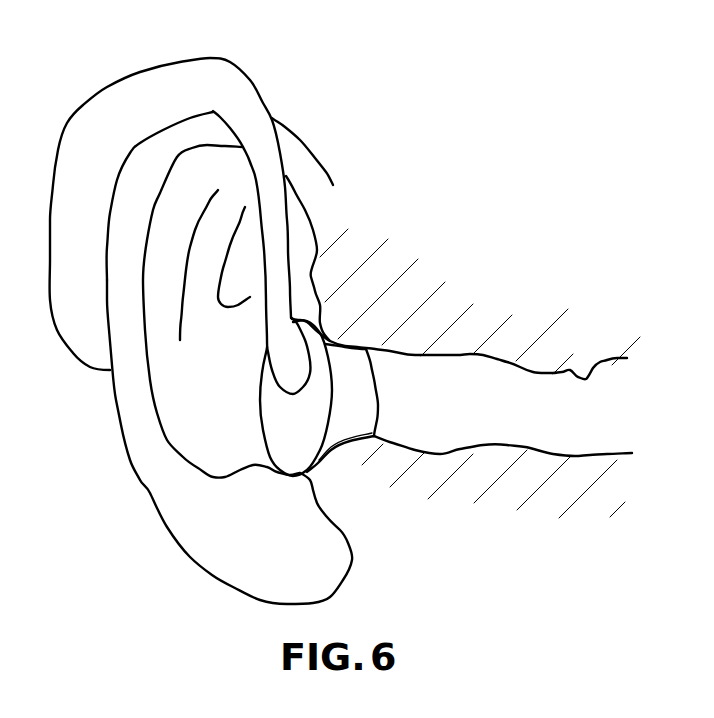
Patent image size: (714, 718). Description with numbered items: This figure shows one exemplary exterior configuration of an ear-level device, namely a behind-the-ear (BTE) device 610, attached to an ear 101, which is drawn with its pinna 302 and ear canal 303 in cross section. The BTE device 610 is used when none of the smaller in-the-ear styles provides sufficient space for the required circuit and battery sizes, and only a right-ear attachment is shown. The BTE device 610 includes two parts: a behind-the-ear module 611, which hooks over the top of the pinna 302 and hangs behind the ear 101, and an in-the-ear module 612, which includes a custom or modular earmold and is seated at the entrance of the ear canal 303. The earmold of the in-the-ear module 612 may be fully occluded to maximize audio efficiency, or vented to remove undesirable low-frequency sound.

The ear 101 is at (211, 373).
The pinna 302 is at (130, 417).
The ear canal 303 is at (592, 362).
The behind-the-ear (BTE) device 610 is at (209, 264).
The behind-the-ear module (BTE module) 611 is at (87, 103).
The in-the-ear module (ITE module) 612 is at (336, 443).